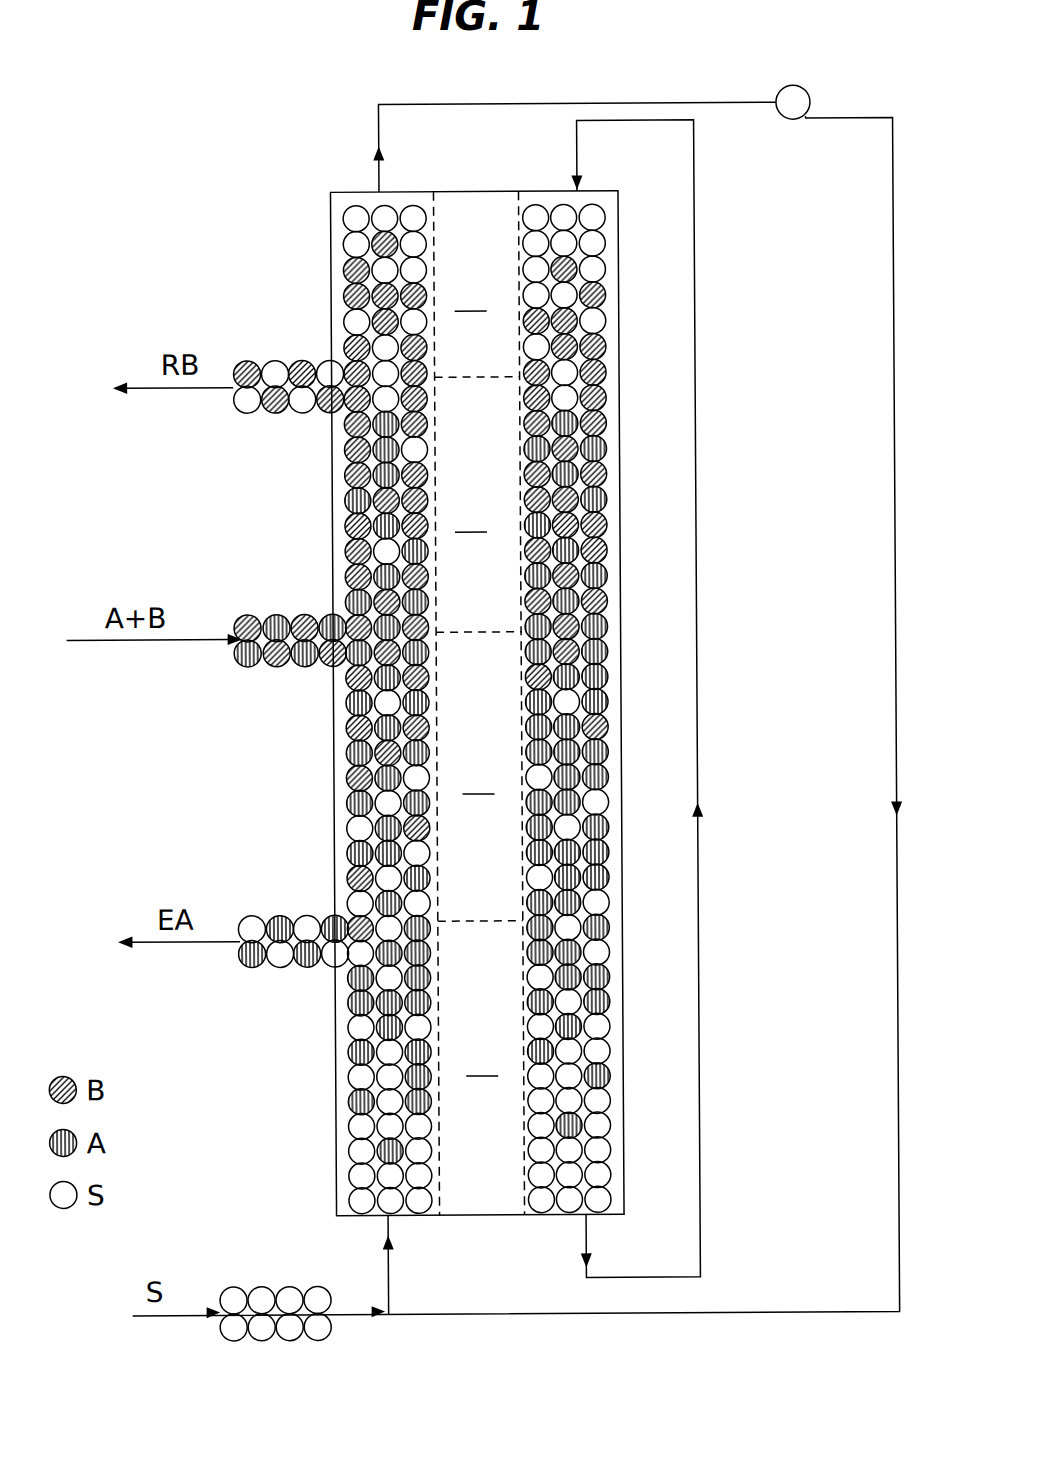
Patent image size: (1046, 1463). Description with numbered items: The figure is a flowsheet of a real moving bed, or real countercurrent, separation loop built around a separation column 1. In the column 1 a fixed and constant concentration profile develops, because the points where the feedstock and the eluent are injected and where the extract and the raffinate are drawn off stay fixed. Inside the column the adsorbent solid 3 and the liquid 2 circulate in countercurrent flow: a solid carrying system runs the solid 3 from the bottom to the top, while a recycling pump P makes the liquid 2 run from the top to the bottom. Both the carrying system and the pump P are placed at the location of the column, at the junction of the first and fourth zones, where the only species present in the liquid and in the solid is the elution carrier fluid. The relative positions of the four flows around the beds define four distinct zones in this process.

The separation column 1 is at (289, 229).
The liquid 2 is at (597, 208).
The adsorbent solid 3 is at (402, 210).
The recycling pump P is at (810, 92).